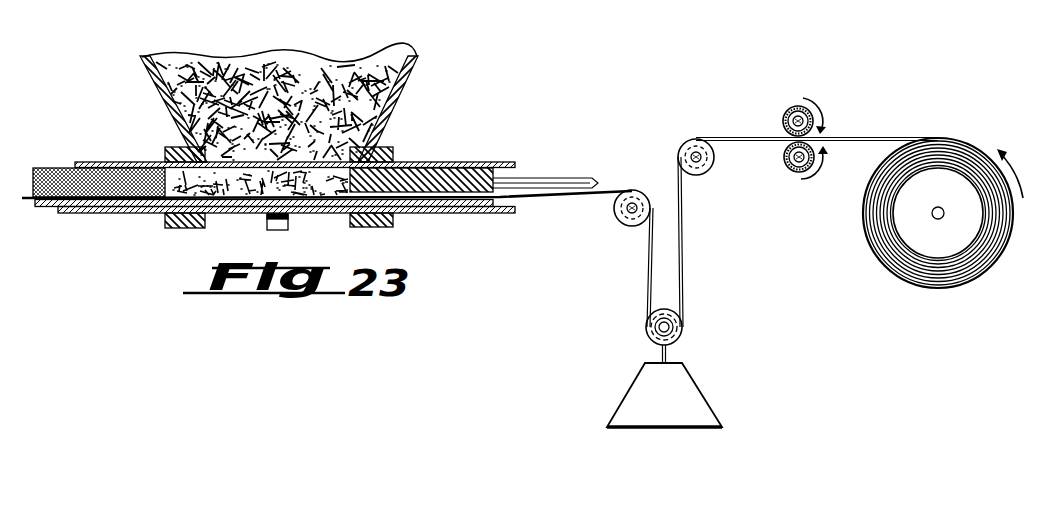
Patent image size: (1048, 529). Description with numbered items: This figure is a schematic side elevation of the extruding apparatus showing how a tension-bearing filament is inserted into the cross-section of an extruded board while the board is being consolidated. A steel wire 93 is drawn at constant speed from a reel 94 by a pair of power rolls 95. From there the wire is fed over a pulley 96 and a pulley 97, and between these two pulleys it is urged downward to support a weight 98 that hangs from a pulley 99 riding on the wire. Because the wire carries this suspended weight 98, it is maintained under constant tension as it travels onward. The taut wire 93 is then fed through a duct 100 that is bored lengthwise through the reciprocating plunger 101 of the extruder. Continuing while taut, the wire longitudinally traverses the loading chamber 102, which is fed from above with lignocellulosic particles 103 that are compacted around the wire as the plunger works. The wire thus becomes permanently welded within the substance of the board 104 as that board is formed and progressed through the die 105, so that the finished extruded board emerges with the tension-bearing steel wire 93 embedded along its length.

The steel wire 93 is at (25, 201).
The reel 94 is at (968, 155).
The power rolls 95 is at (790, 110).
The pulley 96 is at (627, 227).
The pulley 97 is at (696, 155).
The weight 98 is at (698, 403).
The pulley 99 is at (675, 332).
The duct 100 is at (330, 215).
The reciprocating plunger 101 is at (510, 160).
The loading chamber 102 is at (222, 240).
The lignocellulosic particles 103 is at (250, 62).
The board 104 is at (45, 168).
The die 105 is at (117, 160).